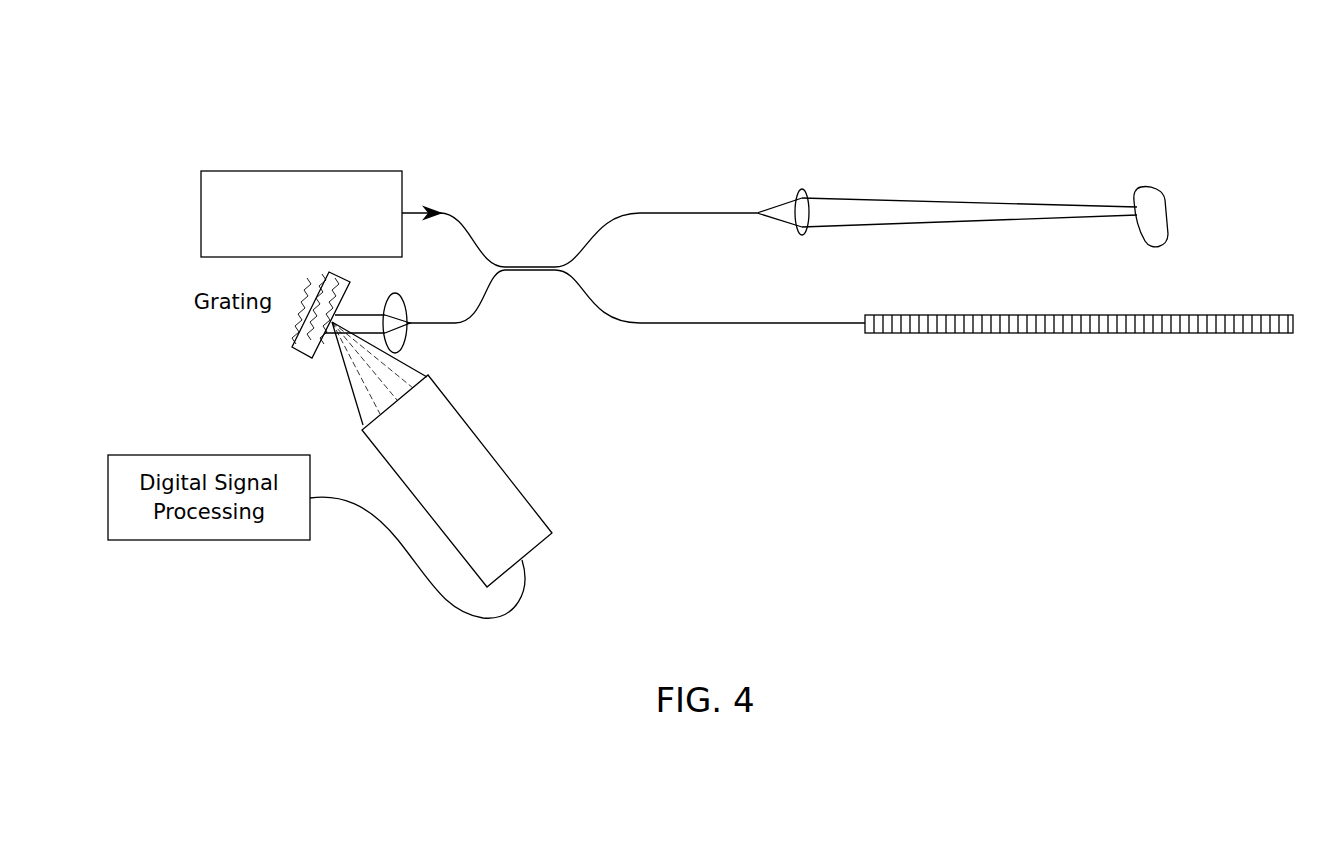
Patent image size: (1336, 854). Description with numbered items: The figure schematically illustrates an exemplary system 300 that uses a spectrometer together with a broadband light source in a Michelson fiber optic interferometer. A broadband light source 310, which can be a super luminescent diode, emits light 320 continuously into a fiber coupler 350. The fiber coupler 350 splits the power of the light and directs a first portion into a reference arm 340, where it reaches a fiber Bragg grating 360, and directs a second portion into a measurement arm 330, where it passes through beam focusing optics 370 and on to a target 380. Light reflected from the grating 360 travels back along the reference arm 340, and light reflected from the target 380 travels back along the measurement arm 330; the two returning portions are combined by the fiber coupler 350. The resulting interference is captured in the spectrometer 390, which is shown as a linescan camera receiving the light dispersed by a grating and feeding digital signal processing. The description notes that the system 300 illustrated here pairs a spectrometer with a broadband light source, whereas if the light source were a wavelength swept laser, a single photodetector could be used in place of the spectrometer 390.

The system 300 is at (1038, 67).
The broadband light source 310 is at (295, 171).
The light 320 is at (407, 210).
The measurement arm 330 is at (647, 214).
The reference arm 340 is at (643, 325).
The fiber coupler 350 is at (535, 270).
The fiber Bragg grating 360 is at (1075, 315).
The beam focusing optics 370 is at (803, 190).
The target 380 is at (1147, 187).
The spectrometer 390 is at (492, 452).